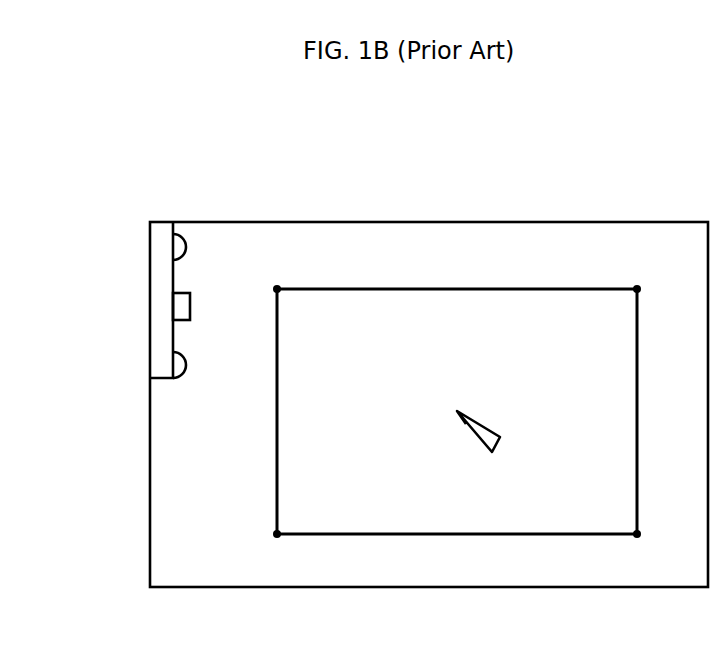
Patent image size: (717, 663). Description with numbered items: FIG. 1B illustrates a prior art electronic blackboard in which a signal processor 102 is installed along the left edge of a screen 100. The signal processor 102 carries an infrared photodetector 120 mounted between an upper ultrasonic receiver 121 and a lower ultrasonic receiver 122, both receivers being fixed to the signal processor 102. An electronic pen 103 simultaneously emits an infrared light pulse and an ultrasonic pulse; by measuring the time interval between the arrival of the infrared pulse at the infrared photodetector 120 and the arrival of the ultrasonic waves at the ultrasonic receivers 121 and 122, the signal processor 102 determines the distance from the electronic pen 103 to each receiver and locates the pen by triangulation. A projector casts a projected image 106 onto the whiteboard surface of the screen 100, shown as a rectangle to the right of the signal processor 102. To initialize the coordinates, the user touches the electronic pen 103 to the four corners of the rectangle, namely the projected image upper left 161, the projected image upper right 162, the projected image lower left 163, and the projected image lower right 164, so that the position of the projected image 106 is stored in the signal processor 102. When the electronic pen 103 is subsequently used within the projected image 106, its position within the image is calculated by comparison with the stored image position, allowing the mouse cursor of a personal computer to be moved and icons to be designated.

The screen 100 is at (607, 222).
The signal processor 102 is at (169, 226).
The electronic pen 103 is at (500, 437).
The projected image 106 is at (433, 327).
The infrared photodetector 120 is at (190, 306).
The ultrasonic receiver 121 is at (188, 247).
The ultrasonic receiver 122 is at (187, 365).
The projected image upper left 161 is at (279, 287).
The projected image upper right 162 is at (636, 288).
The projected image lower left 163 is at (279, 532).
The projected image lower right 164 is at (636, 533).